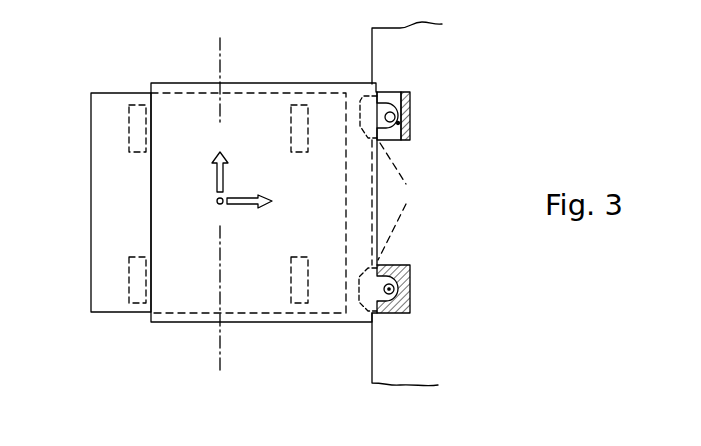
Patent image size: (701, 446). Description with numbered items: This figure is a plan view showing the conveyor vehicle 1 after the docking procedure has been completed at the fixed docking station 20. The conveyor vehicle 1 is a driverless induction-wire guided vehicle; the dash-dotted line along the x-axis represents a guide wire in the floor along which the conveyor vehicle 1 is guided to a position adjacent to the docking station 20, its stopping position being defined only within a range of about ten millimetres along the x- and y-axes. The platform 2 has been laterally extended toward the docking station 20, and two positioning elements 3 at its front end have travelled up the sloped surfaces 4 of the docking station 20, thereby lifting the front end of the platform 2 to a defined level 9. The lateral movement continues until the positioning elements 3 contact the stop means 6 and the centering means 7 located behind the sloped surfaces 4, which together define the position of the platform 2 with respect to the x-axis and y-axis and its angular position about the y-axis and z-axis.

The conveyor vehicle 1 is at (100, 92).
The platform 2 is at (165, 83).
The positioning elements 3 is at (417, 189).
The sloped surfaces 4 is at (396, 201).
The stop means 6 is at (412, 113).
The centering means 7 is at (411, 290).
The defined level 9 is at (396, 100).
The docking station 20 is at (372, 43).